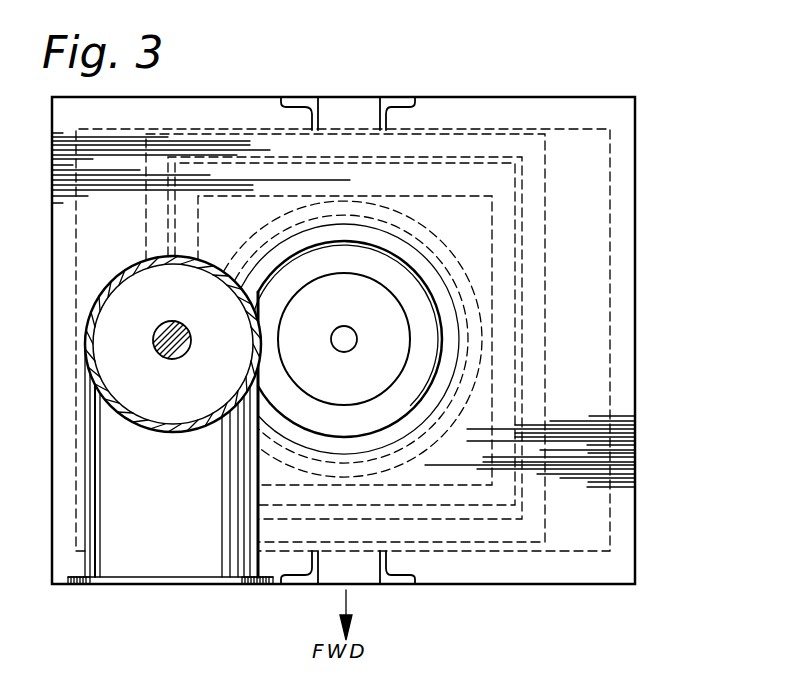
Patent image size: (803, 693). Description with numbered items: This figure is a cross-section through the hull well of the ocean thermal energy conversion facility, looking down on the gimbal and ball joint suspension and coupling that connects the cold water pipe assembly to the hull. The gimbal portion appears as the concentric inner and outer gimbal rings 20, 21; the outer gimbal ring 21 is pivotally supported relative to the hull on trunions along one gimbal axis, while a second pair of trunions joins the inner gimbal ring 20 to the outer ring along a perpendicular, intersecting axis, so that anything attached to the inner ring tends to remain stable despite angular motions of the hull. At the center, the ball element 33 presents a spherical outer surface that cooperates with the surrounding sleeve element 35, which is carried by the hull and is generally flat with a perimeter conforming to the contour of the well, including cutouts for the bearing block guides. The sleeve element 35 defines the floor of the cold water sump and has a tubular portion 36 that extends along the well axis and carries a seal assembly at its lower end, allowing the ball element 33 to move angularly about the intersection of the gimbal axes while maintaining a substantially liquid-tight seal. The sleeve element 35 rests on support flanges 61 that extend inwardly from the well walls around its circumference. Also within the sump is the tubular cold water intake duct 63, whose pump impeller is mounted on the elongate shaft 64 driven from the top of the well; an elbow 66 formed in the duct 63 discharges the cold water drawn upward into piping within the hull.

The inner gimbal ring 20 is at (517, 413).
The outer gimbal ring 21 is at (547, 377).
The ball element 33 is at (410, 265).
The sleeve element 35 is at (594, 479).
The tubular portion 36 is at (444, 292).
The support flanges 61 is at (603, 296).
The cold water intake duct 63 is at (93, 295).
The shaft 64 is at (153, 347).
The elbow 66 is at (135, 558).